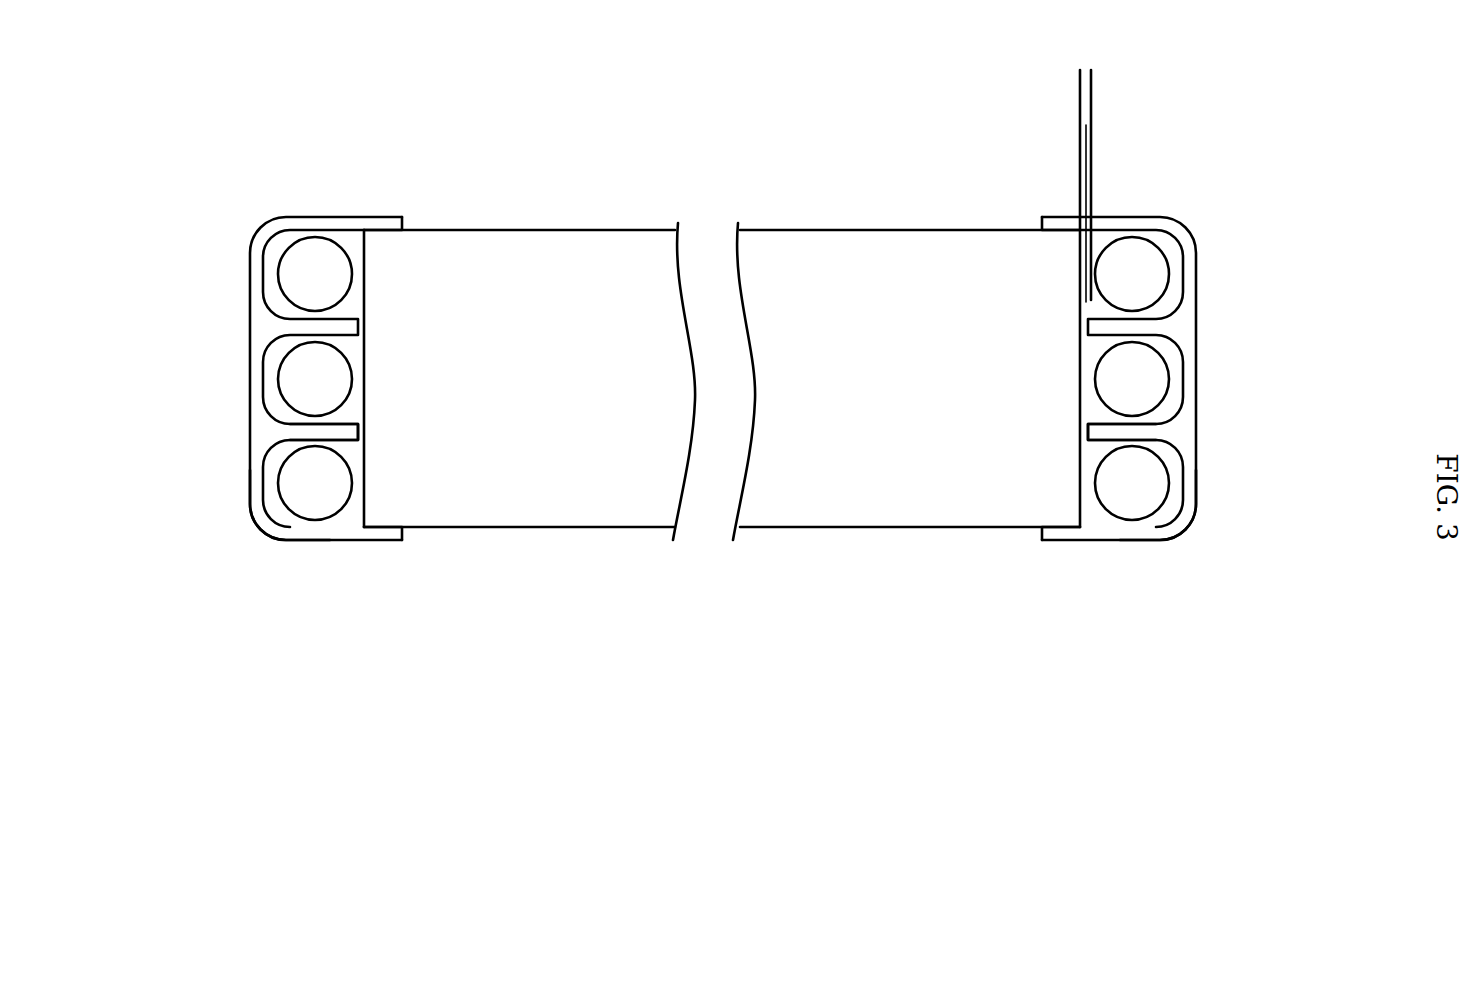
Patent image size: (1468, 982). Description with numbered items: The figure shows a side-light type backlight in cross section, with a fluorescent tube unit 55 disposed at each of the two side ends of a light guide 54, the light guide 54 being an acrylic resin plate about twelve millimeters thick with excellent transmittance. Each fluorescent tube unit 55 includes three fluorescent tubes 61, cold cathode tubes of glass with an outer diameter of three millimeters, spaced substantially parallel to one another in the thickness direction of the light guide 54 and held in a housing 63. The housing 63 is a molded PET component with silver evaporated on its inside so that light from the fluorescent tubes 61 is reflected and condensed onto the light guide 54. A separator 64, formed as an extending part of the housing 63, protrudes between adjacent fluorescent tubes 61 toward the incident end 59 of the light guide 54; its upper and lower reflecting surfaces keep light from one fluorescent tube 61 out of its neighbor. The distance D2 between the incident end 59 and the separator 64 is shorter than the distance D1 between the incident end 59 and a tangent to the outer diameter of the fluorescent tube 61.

The light guide 54 is at (856, 229).
The fluorescent tube unit 55 is at (262, 196).
The incident end 59 is at (1086, 514).
The fluorescent tube 61 is at (278, 278).
The housing 63 is at (268, 533).
The separator 64 is at (358, 432).
The distance D1 is at (1127, 103).
The distance D2 is at (1115, 157).